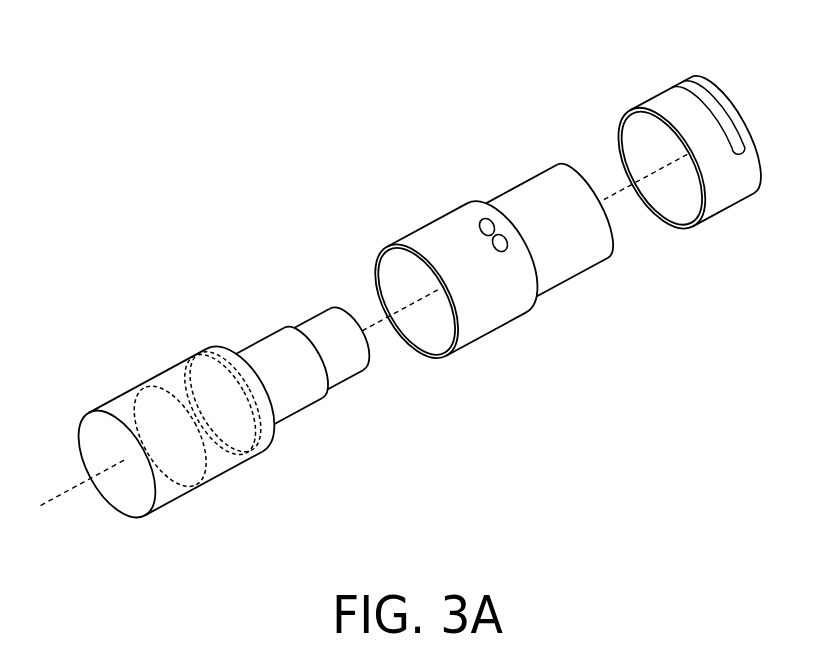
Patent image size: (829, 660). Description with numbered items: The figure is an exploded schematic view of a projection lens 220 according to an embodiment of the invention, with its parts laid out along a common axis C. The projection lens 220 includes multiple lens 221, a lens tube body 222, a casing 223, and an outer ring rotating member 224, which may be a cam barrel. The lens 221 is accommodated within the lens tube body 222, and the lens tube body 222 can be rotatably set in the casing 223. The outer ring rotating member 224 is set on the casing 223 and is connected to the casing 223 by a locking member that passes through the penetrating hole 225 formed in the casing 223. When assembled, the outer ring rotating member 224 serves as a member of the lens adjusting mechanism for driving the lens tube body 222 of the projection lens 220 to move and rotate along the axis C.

The projection lens 220 is at (84, 37).
The lens 221 is at (170, 395).
The lens tube body 222 is at (217, 350).
The casing 223 is at (431, 224).
The outer ring rotating member 224 is at (650, 98).
The penetrating hole 225 is at (487, 219).
The axis C is at (63, 493).